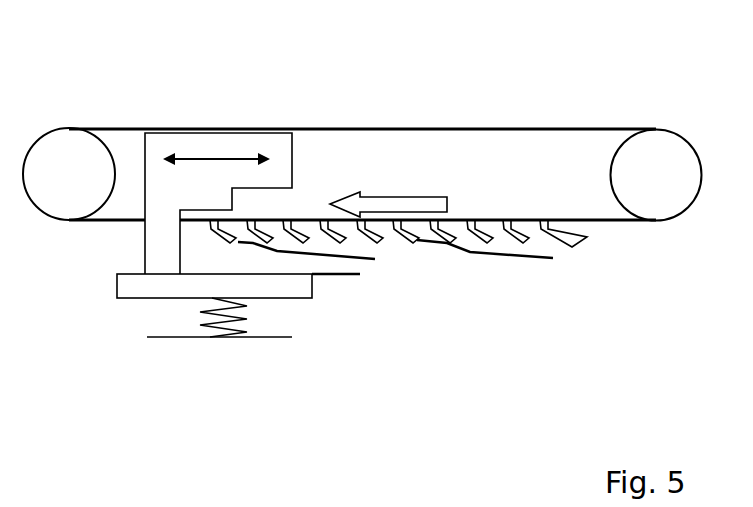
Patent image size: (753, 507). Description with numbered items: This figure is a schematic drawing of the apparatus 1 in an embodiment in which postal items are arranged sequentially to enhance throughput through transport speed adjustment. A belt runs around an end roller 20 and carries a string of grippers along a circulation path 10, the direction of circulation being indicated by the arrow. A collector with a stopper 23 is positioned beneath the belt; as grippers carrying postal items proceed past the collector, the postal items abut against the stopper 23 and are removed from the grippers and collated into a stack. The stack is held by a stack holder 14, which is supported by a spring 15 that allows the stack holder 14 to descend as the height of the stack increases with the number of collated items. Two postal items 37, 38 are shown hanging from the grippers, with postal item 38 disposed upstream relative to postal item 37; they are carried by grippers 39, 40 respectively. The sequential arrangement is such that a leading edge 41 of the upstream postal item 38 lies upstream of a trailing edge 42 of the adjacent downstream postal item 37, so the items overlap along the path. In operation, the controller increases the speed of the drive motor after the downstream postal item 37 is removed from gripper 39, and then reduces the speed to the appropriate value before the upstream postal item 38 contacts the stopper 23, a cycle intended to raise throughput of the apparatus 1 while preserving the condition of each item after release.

The apparatus 1 is at (104, 78).
The circulation path 10 is at (378, 195).
The stack holder 14 is at (145, 298).
The spring 15 is at (247, 320).
The end roller 20 is at (609, 173).
The stopper 23 is at (143, 245).
The postal item 37 is at (338, 257).
The postal item 38 is at (522, 255).
The gripper 39 is at (227, 240).
The gripper 40 is at (410, 250).
The leading edge 41 is at (421, 256).
The trailing edge 42 is at (377, 266).